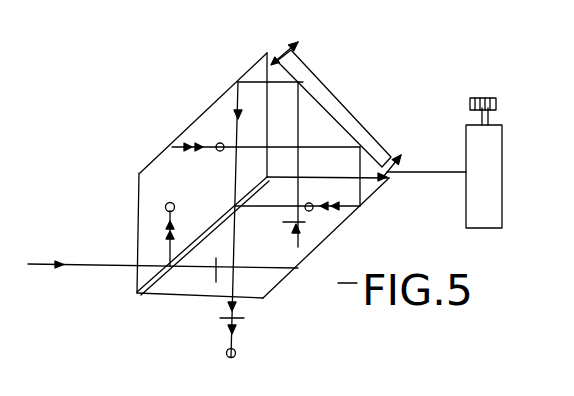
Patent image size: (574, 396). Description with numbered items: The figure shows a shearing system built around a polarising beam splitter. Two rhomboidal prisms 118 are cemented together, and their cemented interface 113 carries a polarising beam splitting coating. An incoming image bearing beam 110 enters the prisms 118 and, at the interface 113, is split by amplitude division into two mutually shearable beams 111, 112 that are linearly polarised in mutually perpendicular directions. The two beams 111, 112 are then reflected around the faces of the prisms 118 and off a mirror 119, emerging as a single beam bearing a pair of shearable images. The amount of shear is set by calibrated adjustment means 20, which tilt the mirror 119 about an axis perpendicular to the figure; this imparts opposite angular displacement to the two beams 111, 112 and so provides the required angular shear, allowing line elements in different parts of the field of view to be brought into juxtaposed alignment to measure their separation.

The calibrated adjustment means 20 is at (502, 131).
The incoming image bearing beam 110 is at (72, 263).
The shearable beam 111 is at (268, 272).
The shearable beam 112 is at (162, 155).
The cemented interface 113 is at (158, 284).
The rhomboidal prisms 118 is at (150, 180).
The mirror 119 is at (335, 110).